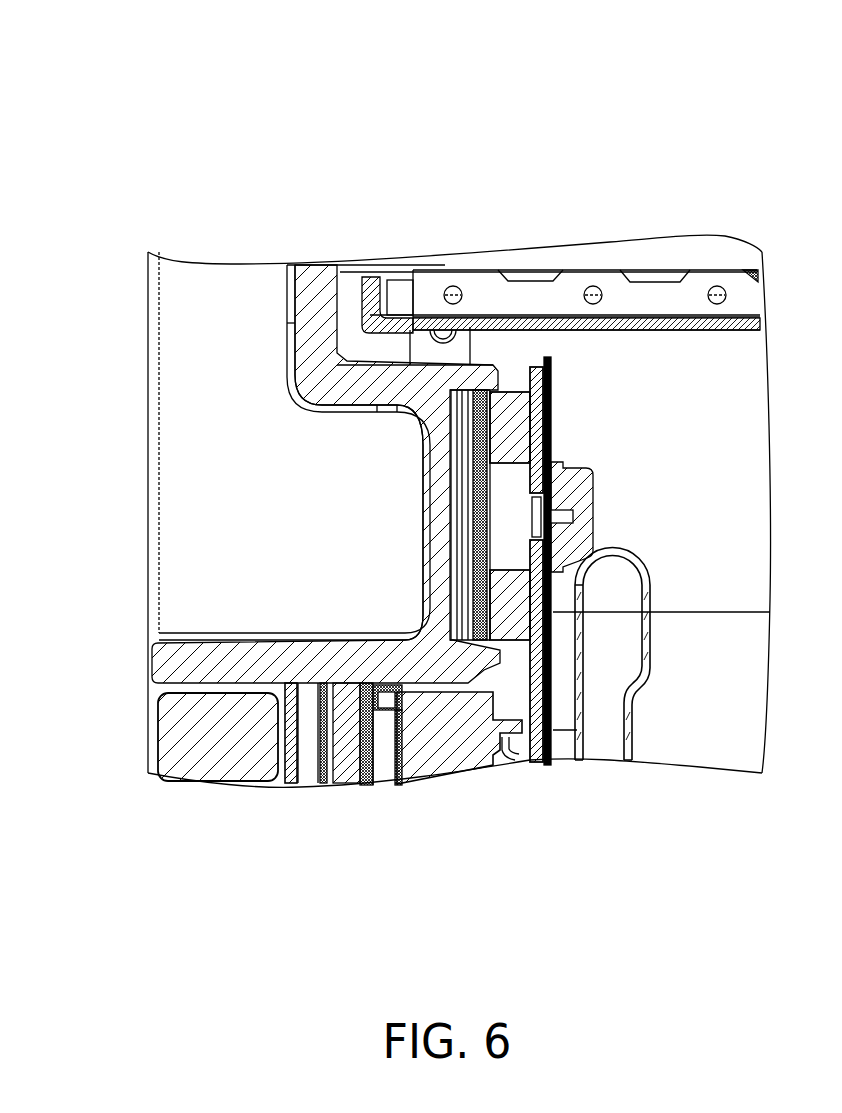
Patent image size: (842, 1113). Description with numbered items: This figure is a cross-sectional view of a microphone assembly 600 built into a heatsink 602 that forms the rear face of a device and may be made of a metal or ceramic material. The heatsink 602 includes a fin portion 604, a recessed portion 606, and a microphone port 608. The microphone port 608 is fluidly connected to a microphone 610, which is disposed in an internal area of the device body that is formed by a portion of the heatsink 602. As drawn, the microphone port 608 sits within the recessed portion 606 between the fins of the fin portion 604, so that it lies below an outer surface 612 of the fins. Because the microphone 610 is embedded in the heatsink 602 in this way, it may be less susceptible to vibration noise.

The microphone assembly 600 is at (382, 72).
The heatsink 602 is at (318, 283).
The fin portion 604 is at (188, 293).
The recessed portion 606 is at (207, 574).
The microphone port 608 is at (463, 520).
The microphone 610 is at (571, 489).
The outer surface 612 is at (148, 315).